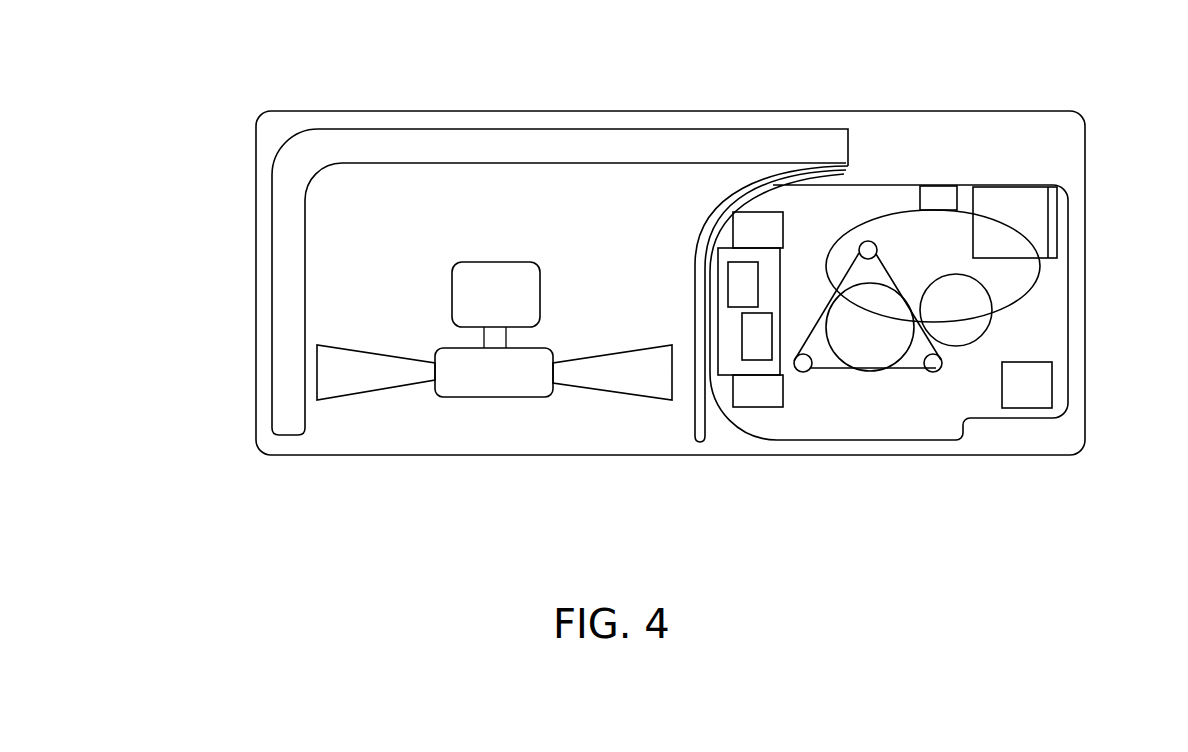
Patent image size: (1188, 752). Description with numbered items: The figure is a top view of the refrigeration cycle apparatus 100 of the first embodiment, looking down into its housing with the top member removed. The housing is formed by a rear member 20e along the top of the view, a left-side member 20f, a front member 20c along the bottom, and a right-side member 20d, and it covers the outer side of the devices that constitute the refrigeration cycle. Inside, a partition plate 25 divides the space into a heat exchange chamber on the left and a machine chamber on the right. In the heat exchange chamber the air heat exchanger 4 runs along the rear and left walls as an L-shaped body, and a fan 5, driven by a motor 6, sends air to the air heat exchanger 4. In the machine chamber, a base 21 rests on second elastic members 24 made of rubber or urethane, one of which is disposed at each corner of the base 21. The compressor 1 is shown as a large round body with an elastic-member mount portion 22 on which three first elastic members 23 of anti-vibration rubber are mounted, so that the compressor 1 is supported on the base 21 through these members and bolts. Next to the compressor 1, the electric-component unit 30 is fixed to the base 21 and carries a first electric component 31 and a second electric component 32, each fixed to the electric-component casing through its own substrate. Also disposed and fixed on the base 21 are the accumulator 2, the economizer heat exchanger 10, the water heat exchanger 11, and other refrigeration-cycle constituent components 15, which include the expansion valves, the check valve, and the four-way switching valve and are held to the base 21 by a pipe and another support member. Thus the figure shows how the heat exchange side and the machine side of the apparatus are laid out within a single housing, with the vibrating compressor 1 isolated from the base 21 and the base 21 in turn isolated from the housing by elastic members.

The refrigeration cycle apparatus 100 is at (1131, 147).
The rear member 20e is at (590, 110).
The left-side member 20f is at (256, 282).
The front member 20c is at (870, 455).
The right-side member 20d is at (1085, 282).
The air heat exchanger 4 is at (385, 146).
The partition plate 25 is at (706, 208).
The fan 5 is at (375, 380).
The motor 6 is at (490, 262).
The electric-component unit 30 is at (740, 353).
The first electric component 31 is at (757, 362).
The second electric component 32 is at (728, 297).
The second elastic member 24 is at (760, 212).
The economizer heat exchanger 10 is at (940, 186).
The water heat exchanger 11 is at (1015, 200).
The refrigeration-cycle constituent components 15 is at (1035, 272).
The first elastic member 23 is at (868, 240).
The compressor 1 is at (865, 345).
The elastic-member mount portion 22 is at (885, 372).
The base 21 is at (1068, 337).
The accumulator 2 is at (987, 330).